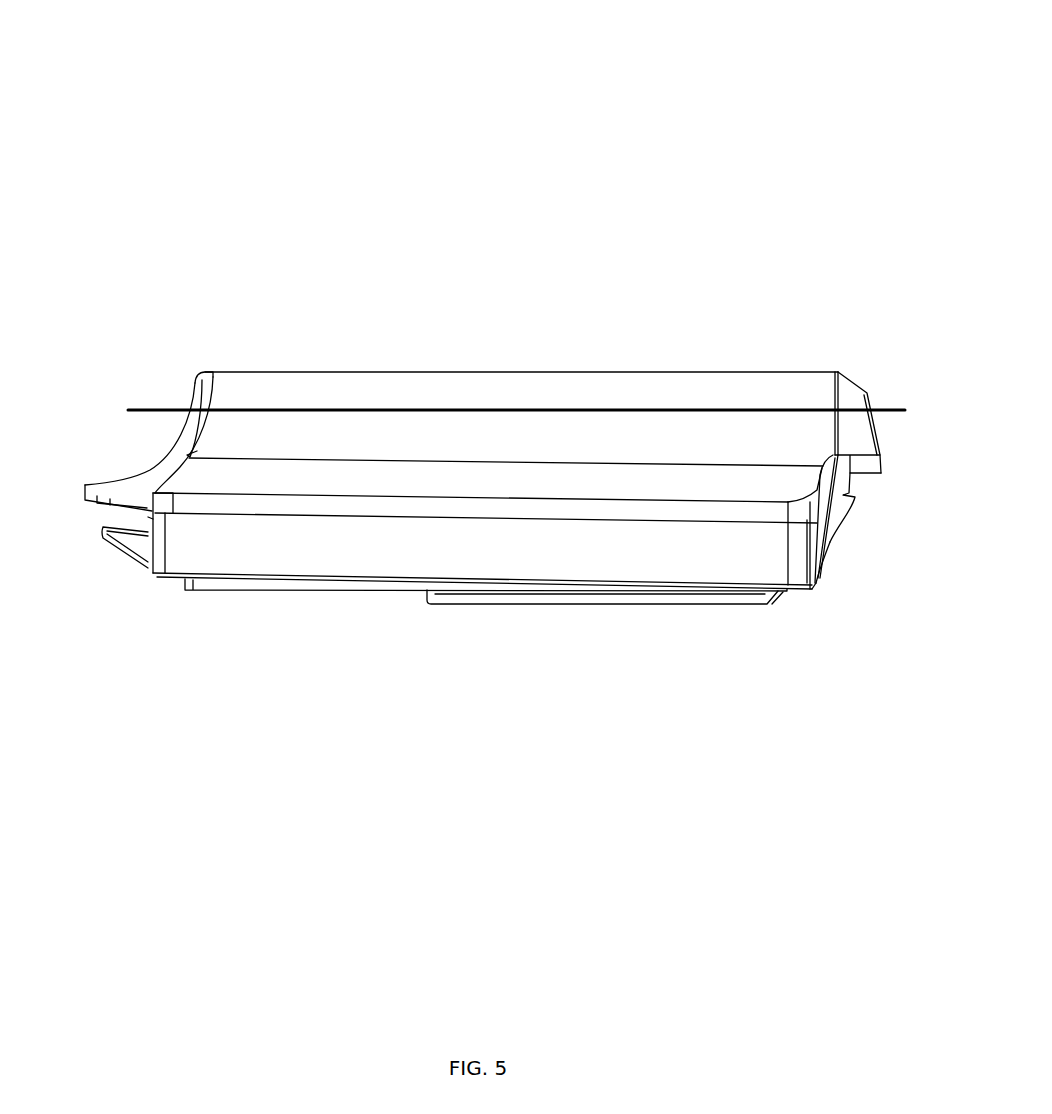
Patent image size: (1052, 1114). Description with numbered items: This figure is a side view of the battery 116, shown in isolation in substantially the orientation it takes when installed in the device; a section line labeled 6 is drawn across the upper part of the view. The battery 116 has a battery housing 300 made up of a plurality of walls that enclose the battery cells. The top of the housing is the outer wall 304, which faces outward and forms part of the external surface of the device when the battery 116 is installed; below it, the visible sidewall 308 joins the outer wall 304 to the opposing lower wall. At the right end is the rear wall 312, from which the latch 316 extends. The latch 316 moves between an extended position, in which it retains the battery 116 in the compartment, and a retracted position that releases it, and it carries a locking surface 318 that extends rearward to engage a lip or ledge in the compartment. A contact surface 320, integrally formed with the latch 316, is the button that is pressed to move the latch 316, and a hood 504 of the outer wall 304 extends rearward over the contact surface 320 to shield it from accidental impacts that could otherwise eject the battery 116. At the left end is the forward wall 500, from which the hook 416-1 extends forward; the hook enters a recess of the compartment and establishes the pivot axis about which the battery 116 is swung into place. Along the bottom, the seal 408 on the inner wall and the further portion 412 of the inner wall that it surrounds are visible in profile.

The battery 116 is at (205, 150).
The section line 6- 6 is at (128, 400).
The battery housing 300 is at (308, 365).
The outer wall 304 is at (477, 395).
The hood 504 is at (852, 400).
The contact surface 320 is at (884, 464).
The locking surface 318 is at (858, 497).
The latch 316 is at (842, 565).
The rear wall 312 is at (815, 497).
The sidewall 308 is at (485, 541).
The forward wall 500 is at (148, 519).
The hook 416-1 is at (138, 543).
The seal 408 is at (310, 583).
The further portion of the inner wall 412 is at (372, 590).